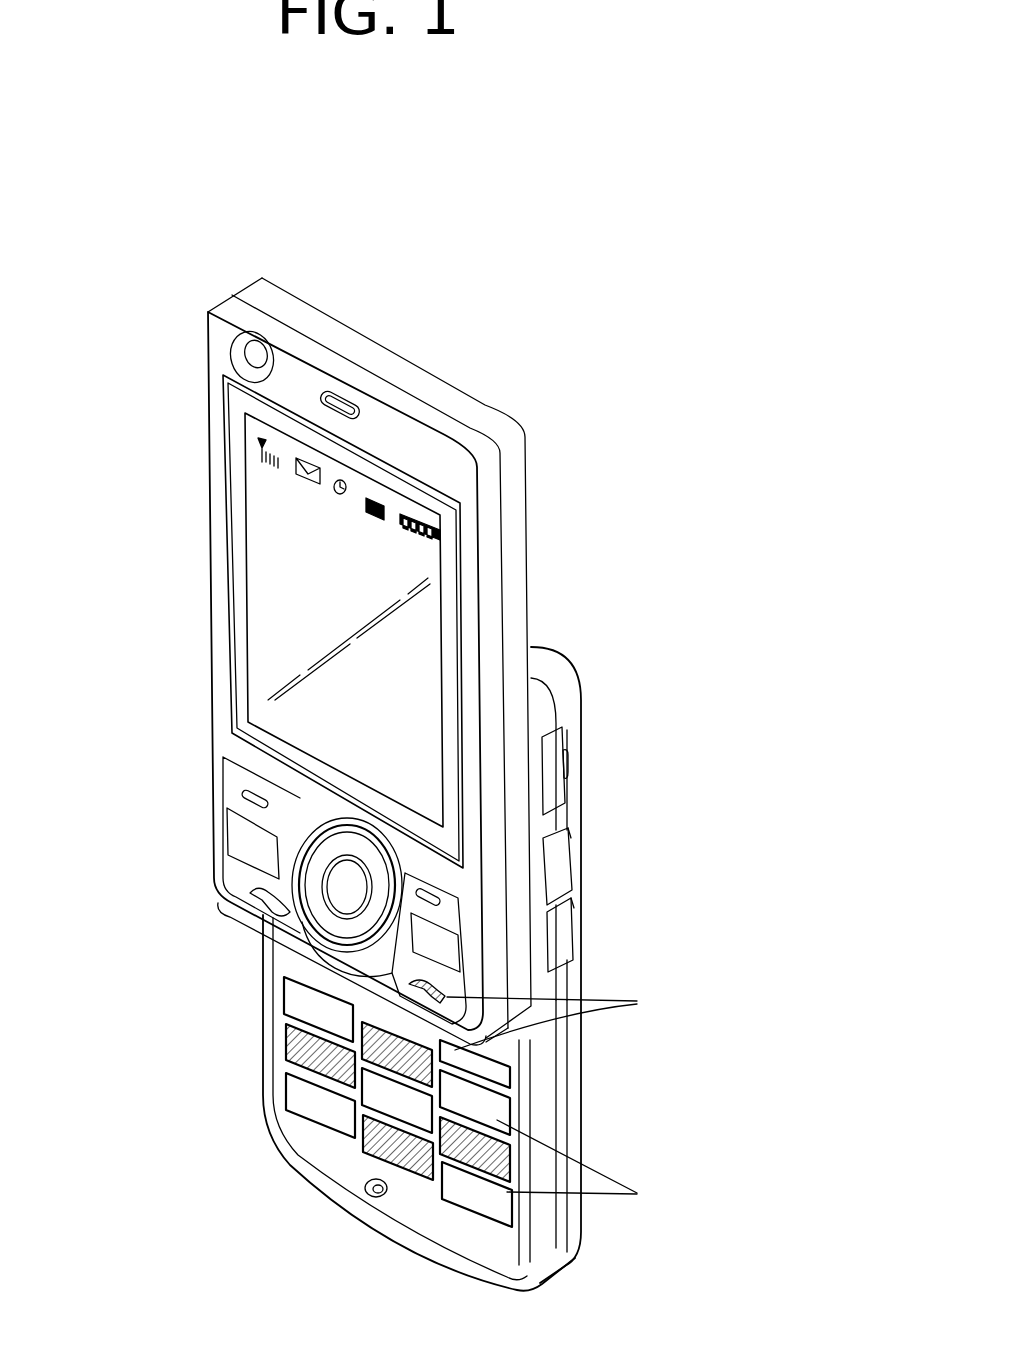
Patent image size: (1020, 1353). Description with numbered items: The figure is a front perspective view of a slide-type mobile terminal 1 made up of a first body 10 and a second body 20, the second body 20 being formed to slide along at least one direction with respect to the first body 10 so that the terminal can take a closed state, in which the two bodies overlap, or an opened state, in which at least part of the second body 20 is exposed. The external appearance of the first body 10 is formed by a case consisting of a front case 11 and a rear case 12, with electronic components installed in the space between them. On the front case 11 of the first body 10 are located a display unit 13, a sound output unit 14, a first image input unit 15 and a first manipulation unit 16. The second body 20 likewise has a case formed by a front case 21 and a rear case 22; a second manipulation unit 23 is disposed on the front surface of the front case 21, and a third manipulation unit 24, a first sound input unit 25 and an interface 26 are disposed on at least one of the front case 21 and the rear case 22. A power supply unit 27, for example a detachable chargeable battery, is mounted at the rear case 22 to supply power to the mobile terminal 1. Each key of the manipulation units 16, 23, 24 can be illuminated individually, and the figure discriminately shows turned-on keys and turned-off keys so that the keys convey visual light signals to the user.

The mobile terminal 1 is at (630, 403).
The first body 10 is at (170, 448).
The front case 11 is at (497, 546).
The rear case 12 is at (515, 497).
The display unit 13 is at (253, 560).
The sound output unit 14 is at (341, 400).
The first image input unit 15 is at (258, 358).
The first manipulation unit 16 is at (245, 833).
The second body 20 is at (250, 1022).
The front case 21 is at (540, 698).
The rear case 22 is at (568, 723).
The second manipulation unit 23 is at (293, 1085).
The third manipulation unit 24 is at (563, 930).
The first sound input unit 25 is at (378, 1196).
The interface 26 is at (557, 763).
The power supply unit 27 is at (573, 1100).